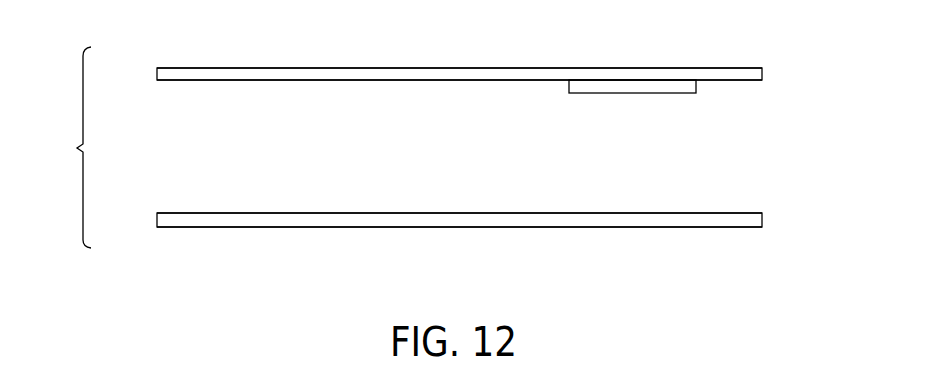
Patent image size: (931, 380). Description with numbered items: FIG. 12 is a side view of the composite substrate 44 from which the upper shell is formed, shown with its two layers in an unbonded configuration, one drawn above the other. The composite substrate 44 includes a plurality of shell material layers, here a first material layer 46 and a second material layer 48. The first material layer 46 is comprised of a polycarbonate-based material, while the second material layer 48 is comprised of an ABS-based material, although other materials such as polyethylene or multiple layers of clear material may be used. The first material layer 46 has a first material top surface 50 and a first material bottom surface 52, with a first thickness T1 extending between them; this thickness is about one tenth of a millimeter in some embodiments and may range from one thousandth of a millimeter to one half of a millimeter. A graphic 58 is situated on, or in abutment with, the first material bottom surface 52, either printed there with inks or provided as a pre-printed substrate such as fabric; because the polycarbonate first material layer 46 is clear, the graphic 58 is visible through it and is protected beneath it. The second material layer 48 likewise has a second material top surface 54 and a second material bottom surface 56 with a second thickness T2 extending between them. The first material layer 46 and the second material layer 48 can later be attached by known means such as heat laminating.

The composite substrate 44 is at (69, 147).
The first material layer 46 is at (762, 73).
The second material layer 48 is at (762, 219).
The first material top surface 50 is at (545, 68).
The first material bottom surface 52 is at (490, 80).
The second material top surface 54 is at (545, 213).
The second material bottom surface 56 is at (333, 227).
The graphic 58 is at (672, 93).
The first thickness T1 is at (145, 104).
The second thickness T2 is at (145, 254).